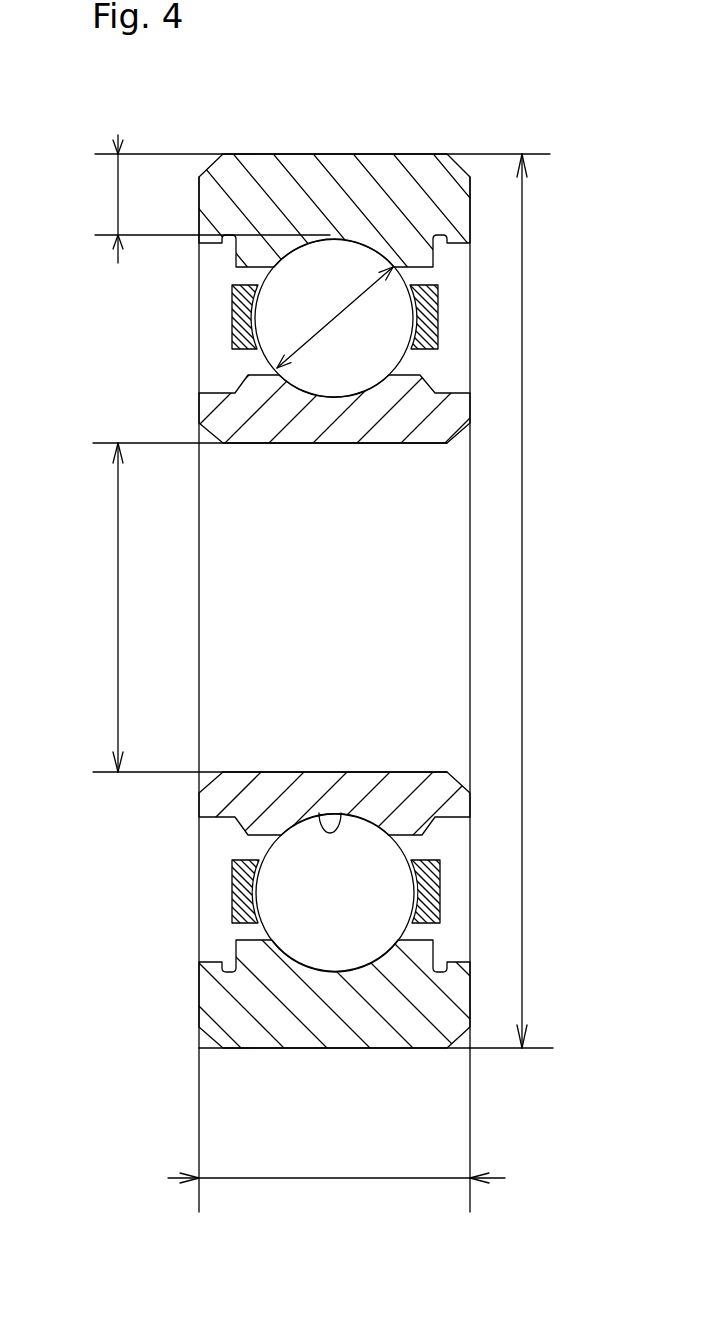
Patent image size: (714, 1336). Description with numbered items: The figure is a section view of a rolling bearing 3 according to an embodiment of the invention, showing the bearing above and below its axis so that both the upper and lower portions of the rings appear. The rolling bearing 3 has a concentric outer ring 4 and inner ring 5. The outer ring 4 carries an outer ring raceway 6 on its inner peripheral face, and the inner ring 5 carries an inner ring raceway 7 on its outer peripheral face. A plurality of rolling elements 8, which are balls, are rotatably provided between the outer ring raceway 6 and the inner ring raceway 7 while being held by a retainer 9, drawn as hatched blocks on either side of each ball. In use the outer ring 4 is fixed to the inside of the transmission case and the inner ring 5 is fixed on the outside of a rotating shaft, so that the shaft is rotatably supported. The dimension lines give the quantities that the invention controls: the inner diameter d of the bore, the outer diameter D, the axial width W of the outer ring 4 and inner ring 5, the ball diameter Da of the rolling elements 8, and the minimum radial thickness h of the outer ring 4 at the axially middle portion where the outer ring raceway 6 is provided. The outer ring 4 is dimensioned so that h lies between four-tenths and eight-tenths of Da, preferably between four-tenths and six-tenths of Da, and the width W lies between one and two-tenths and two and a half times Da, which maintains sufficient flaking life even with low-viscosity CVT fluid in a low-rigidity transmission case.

The rolling bearing 3 is at (548, 221).
The outer ring 4 is at (321, 203).
The inner ring 5 is at (377, 790).
The outer ring raceway 6 is at (361, 970).
The inner ring raceway 7 is at (318, 813).
The rolling elements 8 is at (307, 301).
The retainer 9 is at (438, 310).
The minimum thickness of the outer ring h is at (120, 190).
The inner diameter d is at (118, 587).
The outer diameter D is at (523, 500).
The diameter of the rolling elements Da is at (347, 309).
The width in the axial direction W is at (332, 1179).